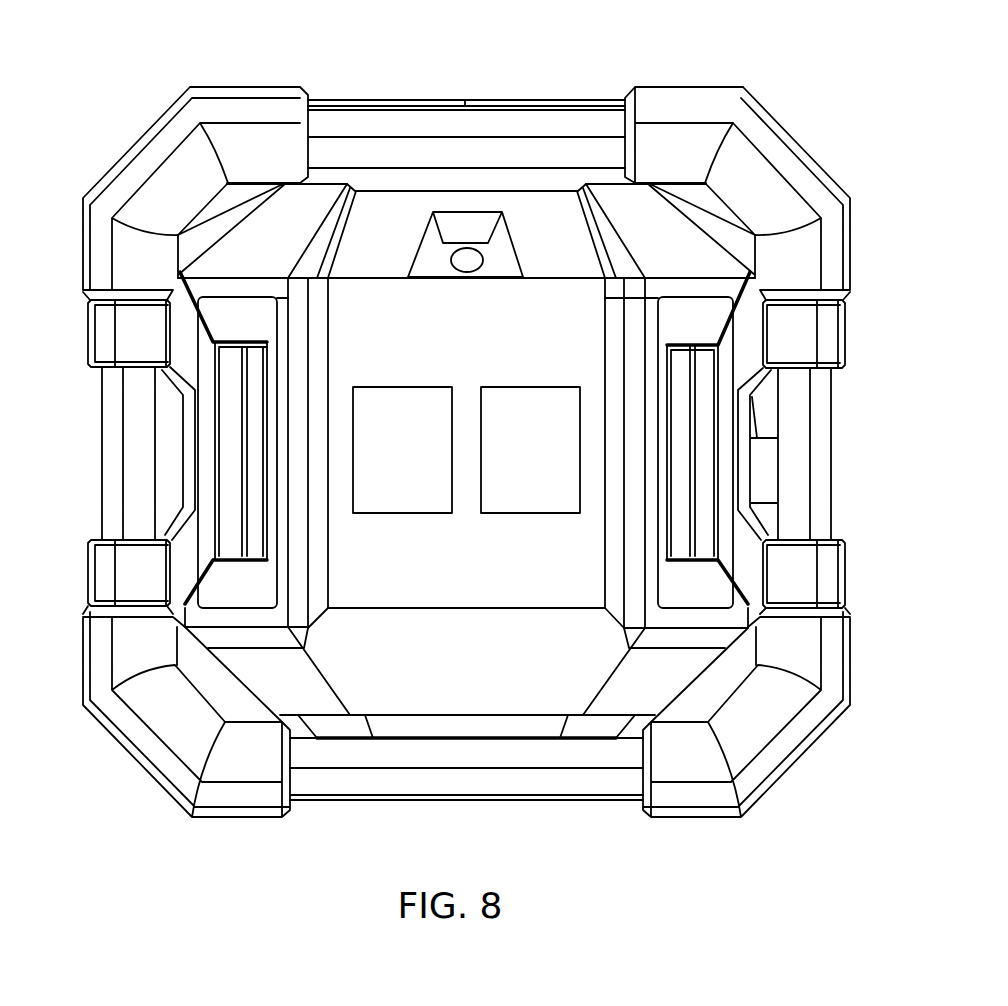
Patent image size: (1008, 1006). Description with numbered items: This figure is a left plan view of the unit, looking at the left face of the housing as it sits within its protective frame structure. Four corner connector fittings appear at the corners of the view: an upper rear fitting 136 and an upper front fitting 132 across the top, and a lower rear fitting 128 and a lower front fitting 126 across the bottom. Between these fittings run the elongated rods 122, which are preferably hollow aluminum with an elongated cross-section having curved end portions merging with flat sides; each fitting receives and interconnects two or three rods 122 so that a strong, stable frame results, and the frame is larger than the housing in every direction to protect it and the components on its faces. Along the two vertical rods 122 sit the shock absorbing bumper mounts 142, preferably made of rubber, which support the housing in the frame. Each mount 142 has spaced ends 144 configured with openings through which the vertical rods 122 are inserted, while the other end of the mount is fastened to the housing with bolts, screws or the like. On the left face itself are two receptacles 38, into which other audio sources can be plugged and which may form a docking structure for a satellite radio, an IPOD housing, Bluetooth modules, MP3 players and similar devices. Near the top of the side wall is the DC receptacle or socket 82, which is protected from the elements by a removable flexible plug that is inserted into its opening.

The receptacles 38 is at (525, 387).
The DC receptacle or socket 82 is at (477, 260).
The elongated rods 122 is at (133, 455).
The lower front fitting 126 is at (782, 757).
The lower rear fitting 128 is at (145, 745).
The upper front fitting 132 is at (685, 107).
The upper rear fitting 136 is at (173, 135).
The shock absorbing bumper mounts 142 is at (208, 445).
The spaced ends 144 is at (125, 330).